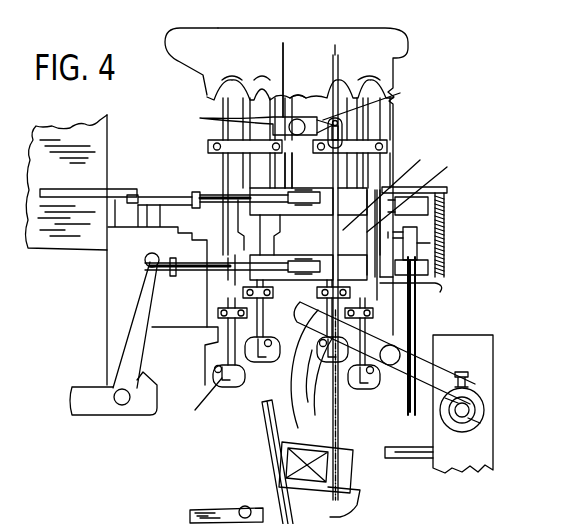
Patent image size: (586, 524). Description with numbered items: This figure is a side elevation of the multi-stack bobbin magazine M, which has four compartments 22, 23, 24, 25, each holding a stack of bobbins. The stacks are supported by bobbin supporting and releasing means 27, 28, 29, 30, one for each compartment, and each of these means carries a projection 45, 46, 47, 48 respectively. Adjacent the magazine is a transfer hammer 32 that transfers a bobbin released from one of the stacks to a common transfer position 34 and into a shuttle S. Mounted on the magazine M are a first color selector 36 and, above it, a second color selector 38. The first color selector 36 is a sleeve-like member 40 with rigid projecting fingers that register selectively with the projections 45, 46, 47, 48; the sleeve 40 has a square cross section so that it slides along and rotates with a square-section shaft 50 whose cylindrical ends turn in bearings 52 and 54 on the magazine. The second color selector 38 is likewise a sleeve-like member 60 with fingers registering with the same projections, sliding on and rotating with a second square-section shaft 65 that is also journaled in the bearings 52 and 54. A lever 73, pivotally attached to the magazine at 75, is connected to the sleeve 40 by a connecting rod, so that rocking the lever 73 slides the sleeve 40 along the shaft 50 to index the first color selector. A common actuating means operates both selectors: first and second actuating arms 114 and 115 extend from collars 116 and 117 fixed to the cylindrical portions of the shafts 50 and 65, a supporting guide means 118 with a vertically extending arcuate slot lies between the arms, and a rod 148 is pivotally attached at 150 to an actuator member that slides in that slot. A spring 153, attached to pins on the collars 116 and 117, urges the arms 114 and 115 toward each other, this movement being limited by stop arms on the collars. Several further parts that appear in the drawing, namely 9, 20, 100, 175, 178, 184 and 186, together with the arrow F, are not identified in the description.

The slide member 9 is at (502, 243).
The operating rod 20 is at (318, 49).
The compartment 22 is at (230, 82).
The compartment 23 is at (262, 82).
The compartment 24 is at (300, 92).
The compartment 25 is at (368, 84).
The bobbin supporting and releasing means 27 is at (216, 378).
The bobbin supporting and releasing means 28 is at (262, 343).
The bobbin supporting and releasing means 29 is at (338, 370).
The bobbin supporting and releasing means 30 is at (362, 378).
The transfer hammer 32 is at (360, 338).
The common transfer position 34 is at (297, 414).
The first color selector 36 is at (316, 246).
The second color selector 38 is at (292, 176).
The sleeve-like member 40 is at (316, 278).
The projection 45 is at (222, 268).
The projection 46 is at (263, 254).
The projection 47 is at (381, 182).
The projection 48 is at (407, 186).
The shaft 50 is at (233, 276).
The bearing 52 is at (218, 249).
The bearing 54 is at (420, 249).
The sleeve-like member 60 is at (312, 190).
The shaft 65 is at (220, 195).
The lever 73 is at (133, 322).
The pivot 75 is at (117, 404).
The rod 100 is at (107, 193).
The first actuating arm 114 is at (420, 282).
The second actuating arm 115 is at (436, 188).
The collar 116 is at (440, 270).
The collar 117 is at (428, 213).
The supporting guide means 118 is at (444, 198).
The rod 148 is at (418, 292).
The pivot 150 is at (417, 226).
The spring 153 is at (445, 242).
The rod 175 is at (289, 74).
The lever 178 is at (253, 119).
The pivot 184 is at (374, 115).
The frame 186 is at (340, 500).
The direction F is at (415, 470).
The magazine M is at (422, 127).
The shuttle S is at (317, 468).